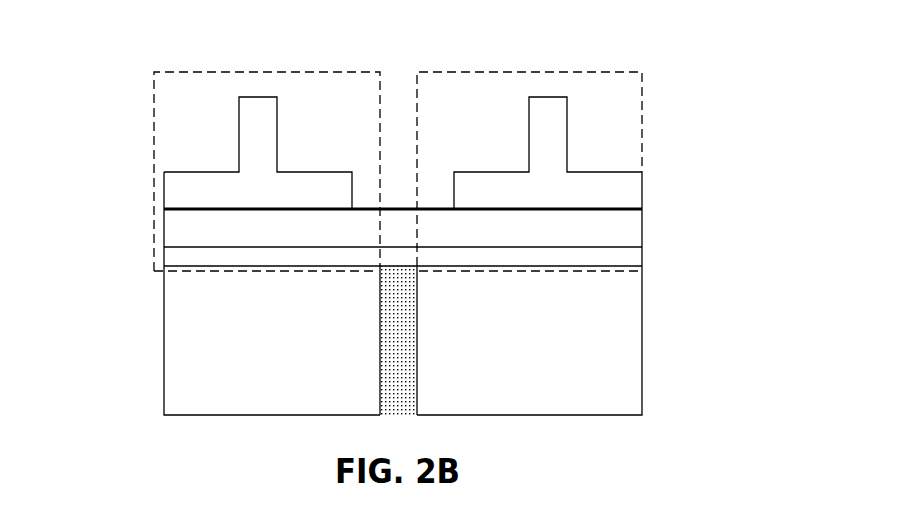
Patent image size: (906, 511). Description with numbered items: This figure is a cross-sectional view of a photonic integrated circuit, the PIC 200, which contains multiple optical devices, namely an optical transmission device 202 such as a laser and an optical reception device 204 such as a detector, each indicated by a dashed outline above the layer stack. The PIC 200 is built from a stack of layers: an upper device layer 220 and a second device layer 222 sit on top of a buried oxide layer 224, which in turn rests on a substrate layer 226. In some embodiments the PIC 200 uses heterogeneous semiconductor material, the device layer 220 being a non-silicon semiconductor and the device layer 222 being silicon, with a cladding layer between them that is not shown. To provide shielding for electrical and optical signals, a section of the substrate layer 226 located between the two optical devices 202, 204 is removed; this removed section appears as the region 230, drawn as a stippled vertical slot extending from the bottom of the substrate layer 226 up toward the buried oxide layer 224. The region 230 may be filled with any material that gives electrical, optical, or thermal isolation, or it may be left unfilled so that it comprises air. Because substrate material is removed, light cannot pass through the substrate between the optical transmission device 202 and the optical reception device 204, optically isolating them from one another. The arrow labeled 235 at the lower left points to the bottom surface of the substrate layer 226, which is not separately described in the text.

The PIC 200 is at (649, 453).
The optical transmission device 202 is at (230, 70).
The optical reception device 204 is at (605, 70).
The device layer 220 is at (202, 188).
The device layer 222 is at (613, 225).
The buried oxide layer 224 is at (603, 258).
The substrate layer 226 is at (623, 314).
The region 230 is at (399, 343).
The bottom surface of substrate 235 is at (162, 413).